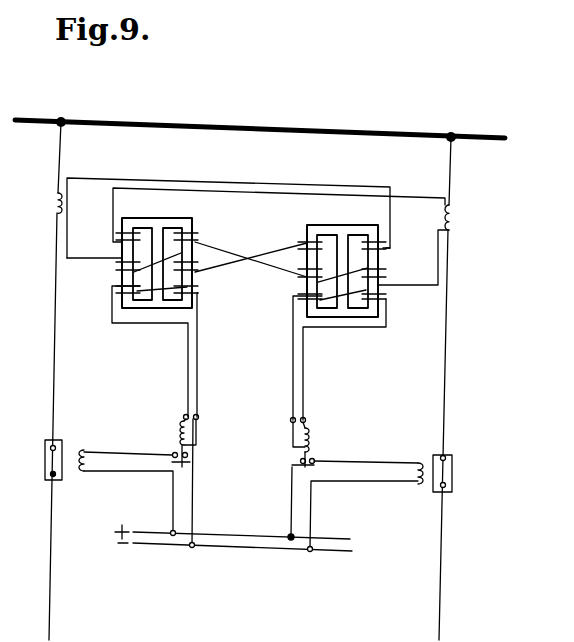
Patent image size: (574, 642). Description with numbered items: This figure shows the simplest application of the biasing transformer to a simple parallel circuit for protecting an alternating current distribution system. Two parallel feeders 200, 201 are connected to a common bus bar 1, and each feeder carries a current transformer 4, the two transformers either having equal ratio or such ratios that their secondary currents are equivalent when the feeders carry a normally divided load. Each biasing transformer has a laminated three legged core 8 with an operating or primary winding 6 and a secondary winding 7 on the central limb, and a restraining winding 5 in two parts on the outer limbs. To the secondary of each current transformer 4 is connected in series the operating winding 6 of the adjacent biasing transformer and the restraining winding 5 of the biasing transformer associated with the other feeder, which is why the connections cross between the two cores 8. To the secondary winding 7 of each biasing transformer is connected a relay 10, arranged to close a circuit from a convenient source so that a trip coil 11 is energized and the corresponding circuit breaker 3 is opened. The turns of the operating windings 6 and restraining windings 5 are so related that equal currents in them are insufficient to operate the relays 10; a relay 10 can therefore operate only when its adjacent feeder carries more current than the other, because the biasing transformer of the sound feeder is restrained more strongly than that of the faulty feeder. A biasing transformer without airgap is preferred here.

The bus bar 1 is at (250, 124).
The circuit breaker 3 is at (45, 460).
The current transformer 4 is at (55, 200).
The restraining winding 5 is at (198, 240).
The primary winding 6 is at (196, 264).
The secondary winding 7 is at (196, 291).
The laminated three legged core 8 is at (194, 222).
The relay 10 is at (175, 432).
The trip coil 11 is at (74, 450).
The parallel feeder 200 is at (56, 370).
The parallel feeder 201 is at (445, 371).